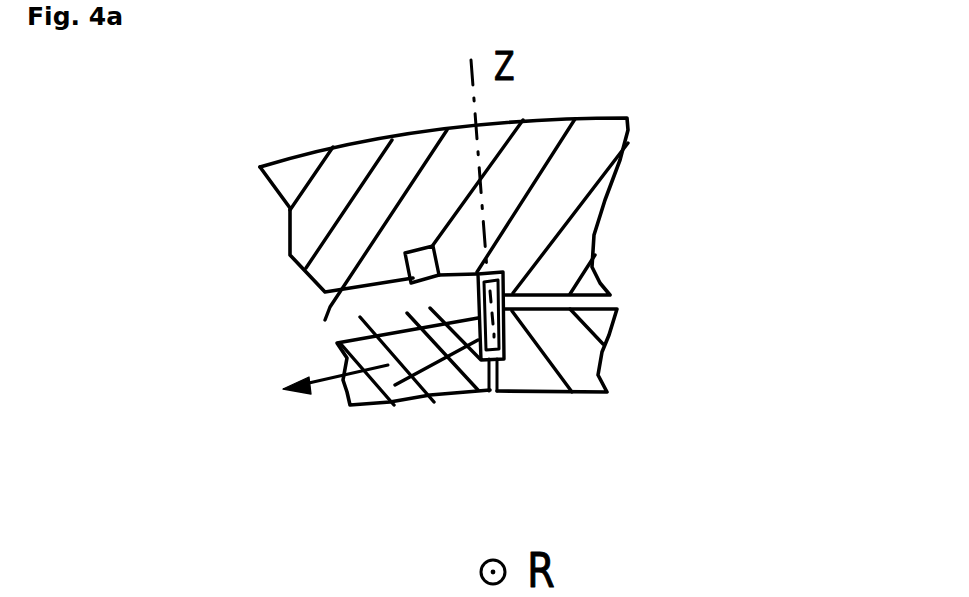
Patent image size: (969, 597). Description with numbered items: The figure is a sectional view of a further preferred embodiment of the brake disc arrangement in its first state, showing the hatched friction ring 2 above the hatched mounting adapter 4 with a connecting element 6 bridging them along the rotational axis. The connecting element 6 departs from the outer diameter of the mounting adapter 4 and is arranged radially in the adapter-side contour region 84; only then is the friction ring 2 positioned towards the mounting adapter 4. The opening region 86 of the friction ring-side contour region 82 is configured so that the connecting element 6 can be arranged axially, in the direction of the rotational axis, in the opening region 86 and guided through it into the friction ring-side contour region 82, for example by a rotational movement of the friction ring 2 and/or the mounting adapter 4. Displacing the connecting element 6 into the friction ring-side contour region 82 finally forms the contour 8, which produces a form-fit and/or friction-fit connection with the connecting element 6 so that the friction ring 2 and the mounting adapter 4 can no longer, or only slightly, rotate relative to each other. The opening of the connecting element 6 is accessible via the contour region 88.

The friction ring 2 is at (605, 138).
The mounting adapter 4 is at (585, 360).
The connecting element 6 is at (430, 397).
The contour 8 is at (512, 331).
The friction ring-side contour region 82 is at (438, 289).
The adapter-side contour region 84 is at (337, 343).
The opening region 86 is at (477, 303).
The contour region 88 is at (497, 394).